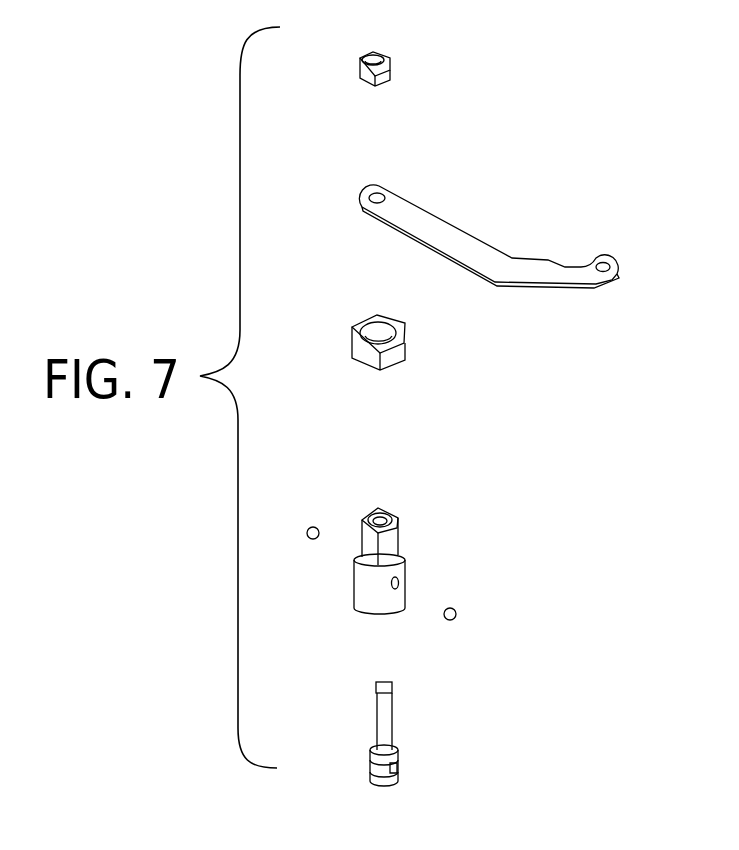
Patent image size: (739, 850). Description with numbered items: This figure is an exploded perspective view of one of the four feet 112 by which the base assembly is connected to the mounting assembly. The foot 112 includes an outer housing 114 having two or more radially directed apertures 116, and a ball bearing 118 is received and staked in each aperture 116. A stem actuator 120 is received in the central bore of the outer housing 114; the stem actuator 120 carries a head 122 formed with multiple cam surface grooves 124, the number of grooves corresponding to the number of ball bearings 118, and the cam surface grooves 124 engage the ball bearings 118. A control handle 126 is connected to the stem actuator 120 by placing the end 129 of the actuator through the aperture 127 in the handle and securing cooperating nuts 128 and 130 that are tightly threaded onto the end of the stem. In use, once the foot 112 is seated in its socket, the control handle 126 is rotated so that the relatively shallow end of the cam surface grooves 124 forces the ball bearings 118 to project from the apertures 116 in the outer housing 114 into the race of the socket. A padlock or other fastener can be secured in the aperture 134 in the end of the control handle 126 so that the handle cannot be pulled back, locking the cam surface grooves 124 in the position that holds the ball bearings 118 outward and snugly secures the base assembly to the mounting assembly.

The foot 112 is at (559, 107).
The outer housing 114 is at (419, 556).
The radially directed aperture 116 is at (399, 583).
The ball bearing 118 is at (309, 529).
The stem actuator 120 is at (393, 732).
The head 122 is at (384, 764).
The cam surface groove 124 is at (370, 765).
The control handle 126 is at (507, 241).
The aperture 127 is at (383, 191).
The nut 128 is at (405, 350).
The end of the actuator 129 is at (390, 683).
The nut 130 is at (393, 65).
The aperture 134 is at (605, 260).